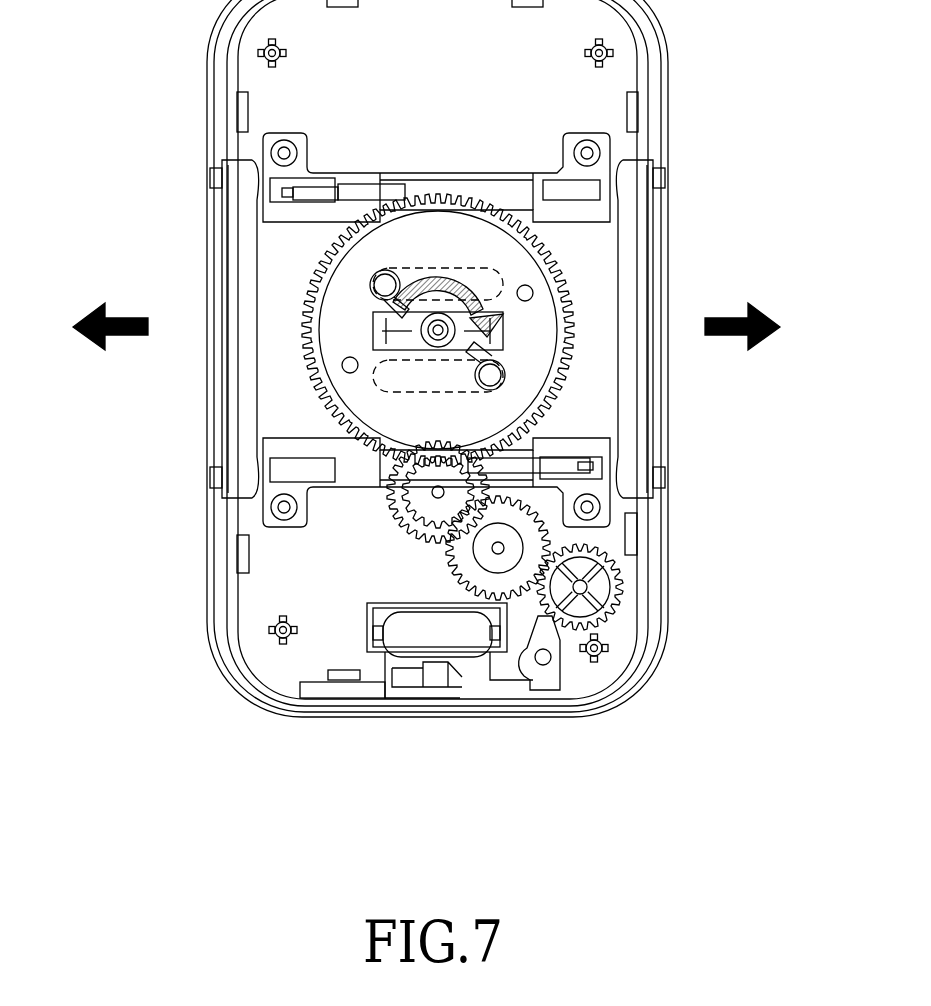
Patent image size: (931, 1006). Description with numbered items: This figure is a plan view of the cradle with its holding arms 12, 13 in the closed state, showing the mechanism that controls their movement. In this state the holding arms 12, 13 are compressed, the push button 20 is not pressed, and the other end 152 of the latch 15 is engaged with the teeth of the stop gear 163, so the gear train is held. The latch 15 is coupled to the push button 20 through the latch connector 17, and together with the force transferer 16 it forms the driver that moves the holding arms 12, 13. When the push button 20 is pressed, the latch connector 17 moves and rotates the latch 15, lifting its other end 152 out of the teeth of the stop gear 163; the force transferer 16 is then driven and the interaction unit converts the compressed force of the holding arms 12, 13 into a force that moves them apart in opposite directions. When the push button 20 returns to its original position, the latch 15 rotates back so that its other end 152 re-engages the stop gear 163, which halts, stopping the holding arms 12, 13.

The holding arm 12 is at (240, 430).
The holding arm 13 is at (640, 408).
The latch 15 is at (560, 660).
The force transferer 16 is at (386, 522).
The latch connector 17 is at (413, 665).
The push button 20 is at (417, 638).
The other end of the latch 152 is at (522, 667).
The stop gear 163 is at (625, 578).